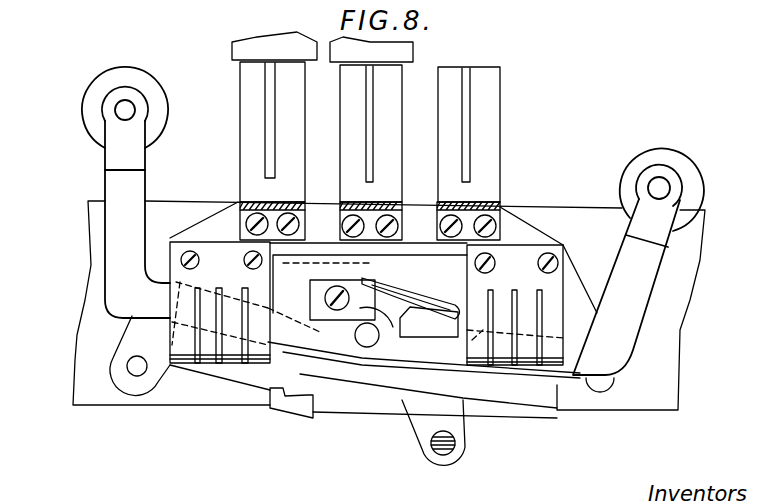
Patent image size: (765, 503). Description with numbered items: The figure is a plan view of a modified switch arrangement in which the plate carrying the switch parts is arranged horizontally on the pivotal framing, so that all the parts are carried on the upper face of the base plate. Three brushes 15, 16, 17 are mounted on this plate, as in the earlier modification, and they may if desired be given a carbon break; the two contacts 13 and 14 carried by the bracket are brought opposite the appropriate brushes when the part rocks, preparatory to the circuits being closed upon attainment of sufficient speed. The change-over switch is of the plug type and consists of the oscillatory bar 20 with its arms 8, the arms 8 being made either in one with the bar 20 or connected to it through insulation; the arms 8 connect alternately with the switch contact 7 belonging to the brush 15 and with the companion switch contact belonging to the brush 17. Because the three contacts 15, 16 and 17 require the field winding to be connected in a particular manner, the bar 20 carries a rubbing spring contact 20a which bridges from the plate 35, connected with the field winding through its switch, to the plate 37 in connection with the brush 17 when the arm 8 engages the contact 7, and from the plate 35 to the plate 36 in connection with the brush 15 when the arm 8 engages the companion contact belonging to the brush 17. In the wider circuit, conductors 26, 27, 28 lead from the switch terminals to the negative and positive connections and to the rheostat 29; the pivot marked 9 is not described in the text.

The switch contact 7 is at (233, 246).
The arm 8 is at (126, 192).
The base plate 9 is at (210, 206).
The contact 13 is at (245, 44).
The contact 14 is at (338, 42).
The brush contact 15 is at (296, 80).
The brush contact 16 is at (403, 82).
The brush contact 17 is at (477, 74).
The oscillatory bar 20 is at (361, 328).
The rubbing spring contact 20a is at (389, 307).
The conductor 26 is at (443, 443).
The conductor 27 is at (137, 366).
The conductor 28 is at (602, 380).
The rheostat 29 is at (287, 418).
The plate 35 is at (307, 360).
The plate 36 is at (308, 248).
The plate 37 is at (431, 247).